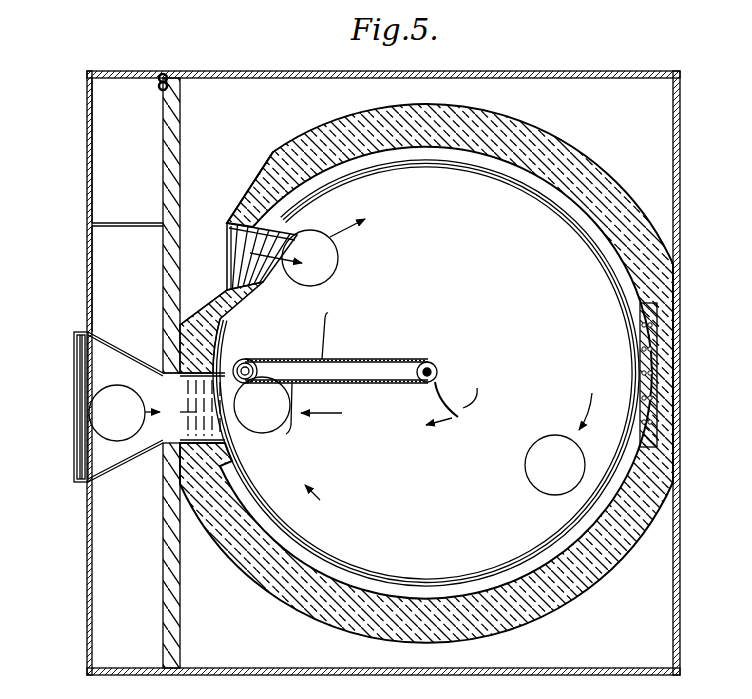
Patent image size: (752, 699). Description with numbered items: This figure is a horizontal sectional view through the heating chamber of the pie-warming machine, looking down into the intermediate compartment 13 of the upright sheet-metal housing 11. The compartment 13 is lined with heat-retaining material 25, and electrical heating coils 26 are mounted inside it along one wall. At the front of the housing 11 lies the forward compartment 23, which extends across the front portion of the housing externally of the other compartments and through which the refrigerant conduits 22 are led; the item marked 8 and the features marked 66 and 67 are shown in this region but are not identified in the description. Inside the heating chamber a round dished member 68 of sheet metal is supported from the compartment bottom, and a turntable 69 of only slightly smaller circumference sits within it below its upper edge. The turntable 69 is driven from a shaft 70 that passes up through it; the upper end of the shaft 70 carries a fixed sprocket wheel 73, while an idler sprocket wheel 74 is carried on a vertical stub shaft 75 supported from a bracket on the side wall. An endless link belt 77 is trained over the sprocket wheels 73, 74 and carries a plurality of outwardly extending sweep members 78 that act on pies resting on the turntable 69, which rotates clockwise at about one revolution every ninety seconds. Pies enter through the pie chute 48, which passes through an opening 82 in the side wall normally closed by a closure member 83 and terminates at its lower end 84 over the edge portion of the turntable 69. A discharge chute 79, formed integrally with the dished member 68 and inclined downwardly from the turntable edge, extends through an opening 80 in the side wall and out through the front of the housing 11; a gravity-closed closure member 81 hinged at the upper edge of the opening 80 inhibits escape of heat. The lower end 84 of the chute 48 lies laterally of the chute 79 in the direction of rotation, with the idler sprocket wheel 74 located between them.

The pivot pin 8 is at (163, 82).
The housing 11 is at (533, 75).
The intermediate compartment 13 is at (653, 167).
The refrigerant conduits 22 is at (160, 84).
The forward compartment 23 is at (108, 268).
The heat-retaining material 25 is at (540, 166).
The heating coils 26 is at (646, 350).
The pie chute 48 is at (229, 243).
The shelf 66 is at (134, 227).
The upper compartment 67 is at (108, 188).
The dished member 68 is at (466, 580).
The turntable 69 is at (430, 507).
The shaft 70 is at (433, 366).
The sprocket wheel 73 is at (440, 371).
The idler sprocket wheel 74 is at (250, 390).
The stub shaft 75 is at (262, 405).
The endless link belt 77 is at (391, 384).
The sweep members 78 is at (327, 334).
The chute 79 is at (119, 447).
The opening 80 is at (163, 432).
The closure member 81 is at (163, 387).
The opening 82 is at (248, 221).
The closure member 83 is at (246, 277).
The lower end of chute 84 is at (323, 244).